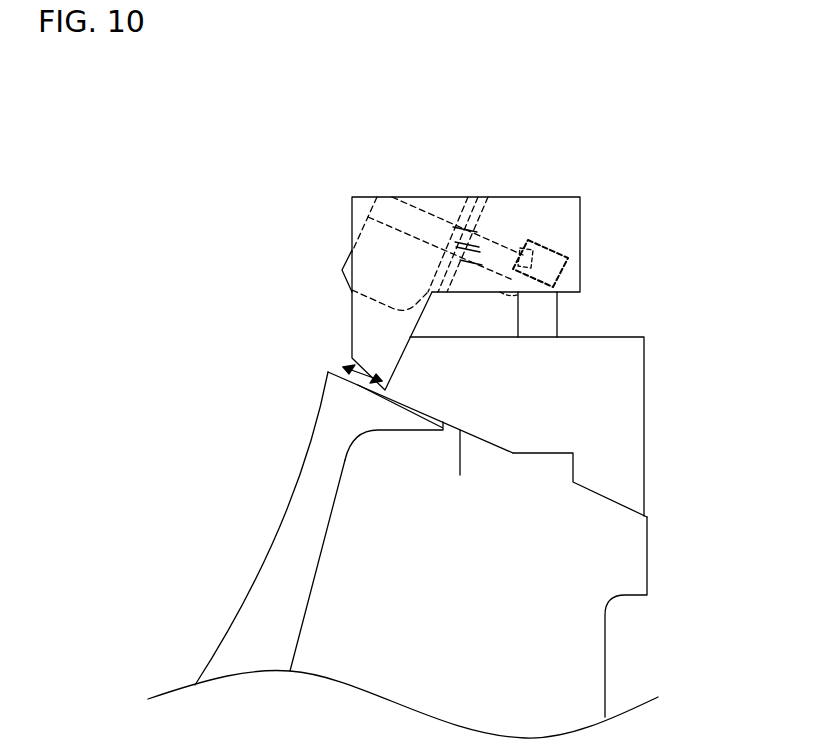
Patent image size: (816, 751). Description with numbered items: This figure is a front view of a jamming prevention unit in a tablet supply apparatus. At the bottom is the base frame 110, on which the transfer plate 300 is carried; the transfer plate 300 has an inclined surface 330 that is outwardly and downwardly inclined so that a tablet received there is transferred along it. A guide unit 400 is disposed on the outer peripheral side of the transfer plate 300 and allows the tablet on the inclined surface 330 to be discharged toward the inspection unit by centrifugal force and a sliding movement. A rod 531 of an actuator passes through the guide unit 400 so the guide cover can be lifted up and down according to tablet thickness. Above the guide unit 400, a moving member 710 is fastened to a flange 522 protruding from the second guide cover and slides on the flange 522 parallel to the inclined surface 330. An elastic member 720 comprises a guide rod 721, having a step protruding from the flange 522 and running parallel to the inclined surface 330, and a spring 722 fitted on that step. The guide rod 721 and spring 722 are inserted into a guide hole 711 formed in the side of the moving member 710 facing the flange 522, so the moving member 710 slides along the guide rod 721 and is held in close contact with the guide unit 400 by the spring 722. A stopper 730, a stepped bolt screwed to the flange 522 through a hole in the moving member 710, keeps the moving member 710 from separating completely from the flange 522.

The base frame 110 is at (582, 662).
The transfer plate 300 is at (280, 575).
The inclined surface 330 is at (355, 383).
The guide unit 400 is at (623, 423).
The flange 522 is at (345, 272).
The rod 531 is at (543, 320).
The moving member 710 is at (558, 213).
The guide hole 711 is at (585, 232).
The elastic member 720 is at (480, 195).
The guide rod 721 is at (502, 233).
The spring 722 is at (542, 237).
The stopper 730 is at (583, 285).